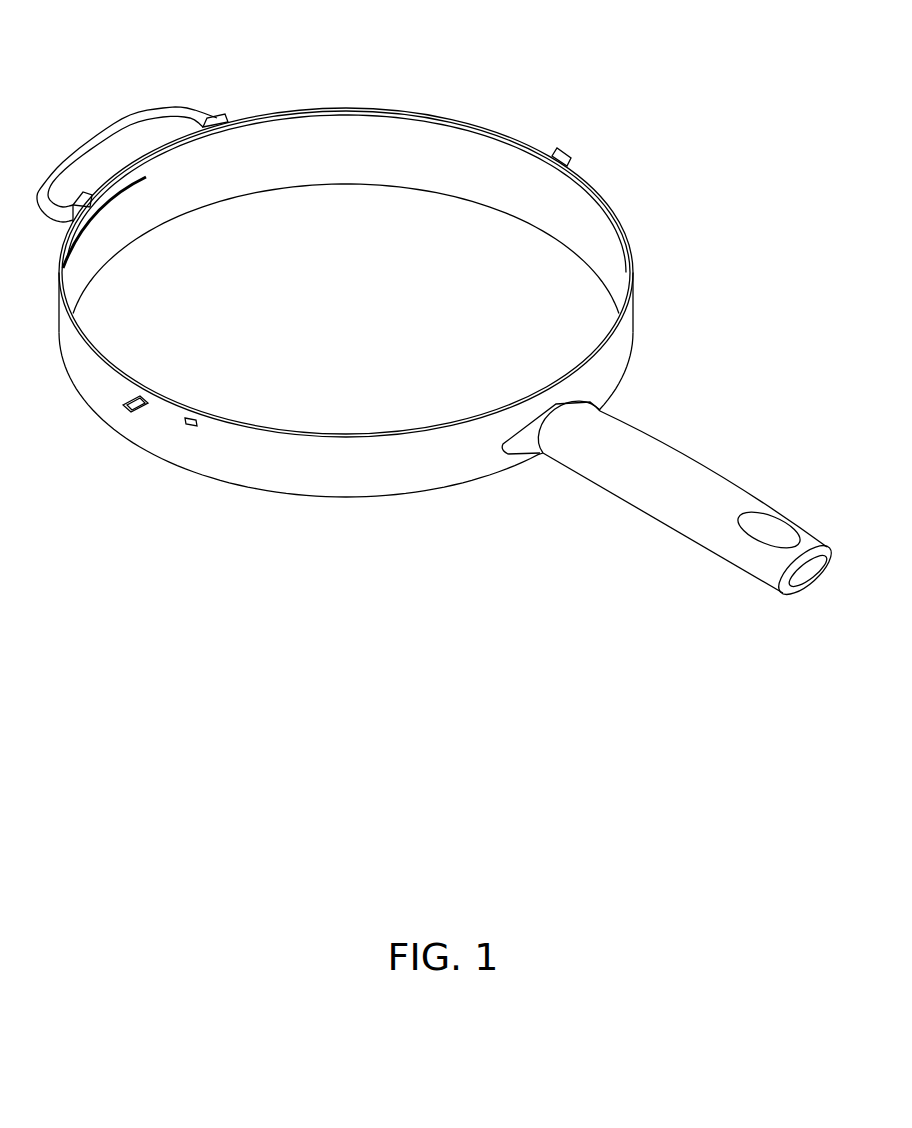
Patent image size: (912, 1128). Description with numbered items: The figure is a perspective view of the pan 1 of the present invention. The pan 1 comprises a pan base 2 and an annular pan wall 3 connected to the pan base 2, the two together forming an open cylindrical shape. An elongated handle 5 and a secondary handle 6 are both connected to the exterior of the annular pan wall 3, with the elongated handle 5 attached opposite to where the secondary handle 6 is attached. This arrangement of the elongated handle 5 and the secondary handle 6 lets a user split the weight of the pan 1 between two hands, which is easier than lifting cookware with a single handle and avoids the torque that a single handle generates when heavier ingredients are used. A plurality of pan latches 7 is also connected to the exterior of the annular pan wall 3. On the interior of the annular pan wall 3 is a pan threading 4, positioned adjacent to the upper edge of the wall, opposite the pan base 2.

The pan 1 is at (295, 528).
The pan base 2 is at (580, 318).
The annular pan wall 3 is at (375, 140).
The pan threading 4 is at (268, 116).
The elongated handle 5 is at (617, 482).
The secondary handle 6 is at (125, 123).
The pan latches 7 is at (556, 154).